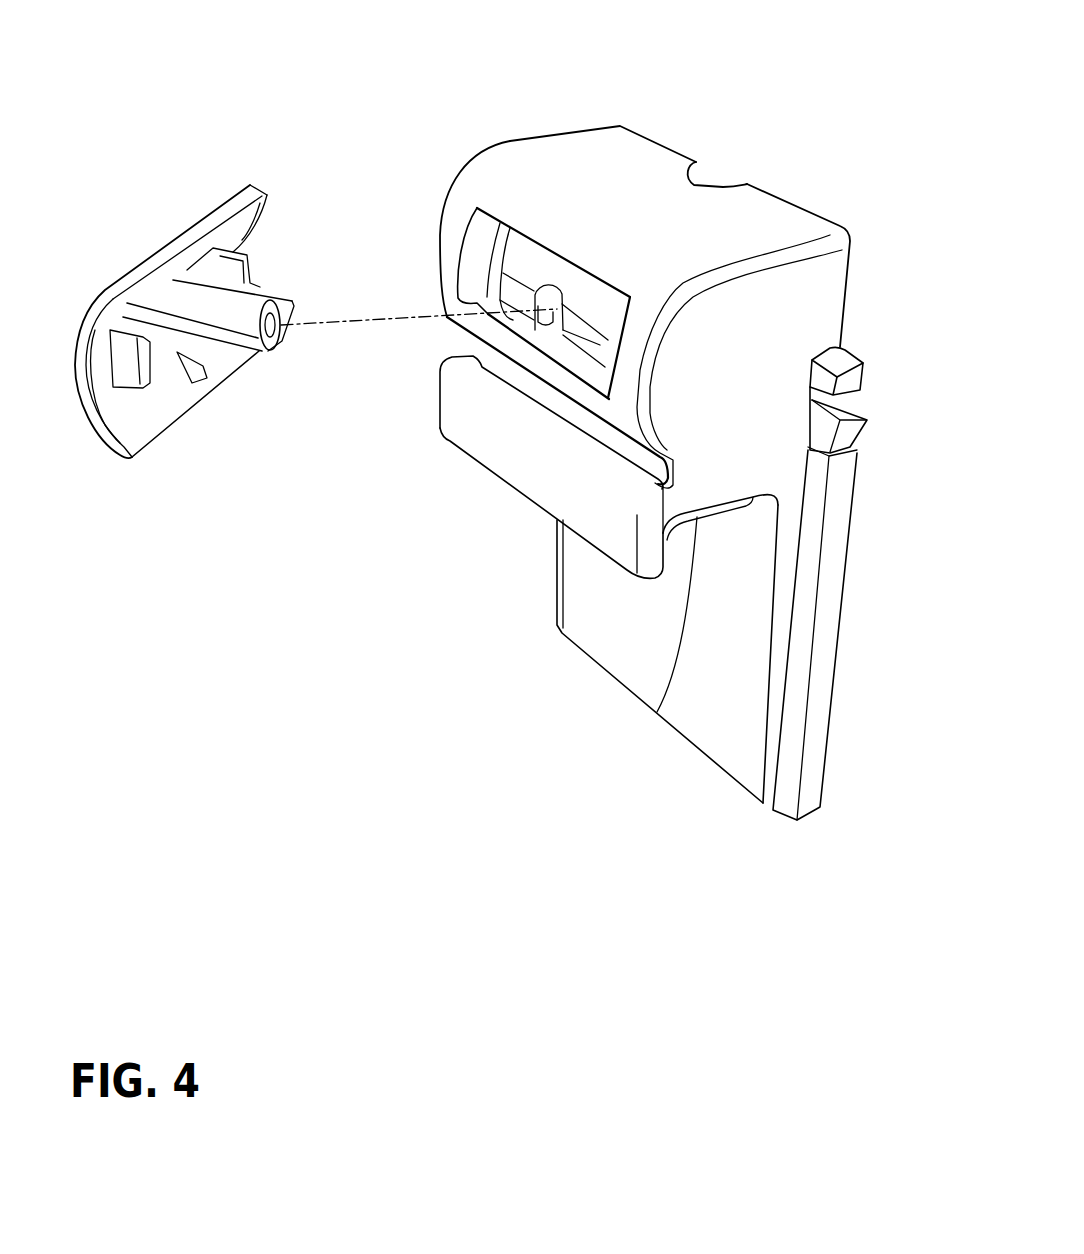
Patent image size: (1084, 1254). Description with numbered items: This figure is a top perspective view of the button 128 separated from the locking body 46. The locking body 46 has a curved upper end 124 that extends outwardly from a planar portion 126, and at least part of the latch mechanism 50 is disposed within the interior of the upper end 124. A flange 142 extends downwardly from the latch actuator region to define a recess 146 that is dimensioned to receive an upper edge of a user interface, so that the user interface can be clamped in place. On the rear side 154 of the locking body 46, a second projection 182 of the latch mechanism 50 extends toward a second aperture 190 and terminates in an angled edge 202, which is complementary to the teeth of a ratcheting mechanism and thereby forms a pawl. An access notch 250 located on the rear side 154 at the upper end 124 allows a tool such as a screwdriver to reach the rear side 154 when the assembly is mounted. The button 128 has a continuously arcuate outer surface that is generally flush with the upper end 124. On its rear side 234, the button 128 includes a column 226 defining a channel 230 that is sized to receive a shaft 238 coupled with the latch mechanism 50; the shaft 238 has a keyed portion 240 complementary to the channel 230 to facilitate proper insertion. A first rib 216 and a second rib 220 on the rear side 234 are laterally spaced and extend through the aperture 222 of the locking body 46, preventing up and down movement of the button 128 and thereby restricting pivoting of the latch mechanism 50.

The locking body 46 is at (642, 115).
The latch mechanism 50 is at (528, 257).
The upper end 124 is at (744, 320).
The planar portion 126 is at (712, 713).
The button 128 is at (153, 270).
The flange 142 is at (543, 480).
The recess 146 is at (657, 713).
The rear side 154 is at (843, 690).
The second projection 182 is at (855, 419).
The second aperture 190 is at (858, 402).
The angled edge 202 is at (847, 437).
The first rib 216 is at (257, 287).
The second rib 220 is at (123, 357).
The aperture 222 is at (467, 250).
The column 226 is at (242, 312).
The channel 230 is at (279, 347).
The rear side 234 is at (153, 407).
The shaft 238 is at (555, 320).
The keyed portion 240 is at (533, 318).
The access notch 250 is at (705, 166).